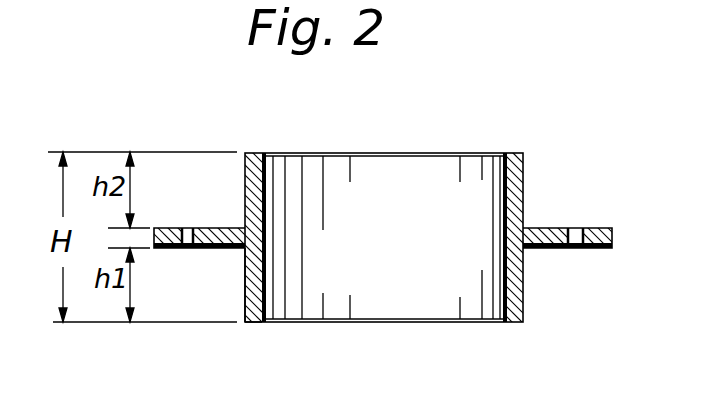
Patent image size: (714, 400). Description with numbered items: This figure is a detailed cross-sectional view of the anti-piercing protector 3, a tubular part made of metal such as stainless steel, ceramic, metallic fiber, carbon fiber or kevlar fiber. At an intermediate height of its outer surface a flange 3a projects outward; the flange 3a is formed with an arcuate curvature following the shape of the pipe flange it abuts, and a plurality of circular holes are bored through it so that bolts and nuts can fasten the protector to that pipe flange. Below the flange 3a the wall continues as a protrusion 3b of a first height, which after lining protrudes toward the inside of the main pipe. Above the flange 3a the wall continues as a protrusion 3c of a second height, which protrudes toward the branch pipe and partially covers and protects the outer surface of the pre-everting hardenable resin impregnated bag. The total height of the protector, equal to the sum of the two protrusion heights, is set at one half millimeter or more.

The anti-piercing protector 3 is at (519, 142).
The flange 3a is at (598, 249).
The protrusion 3b is at (243, 302).
The protrusion 3c is at (243, 157).